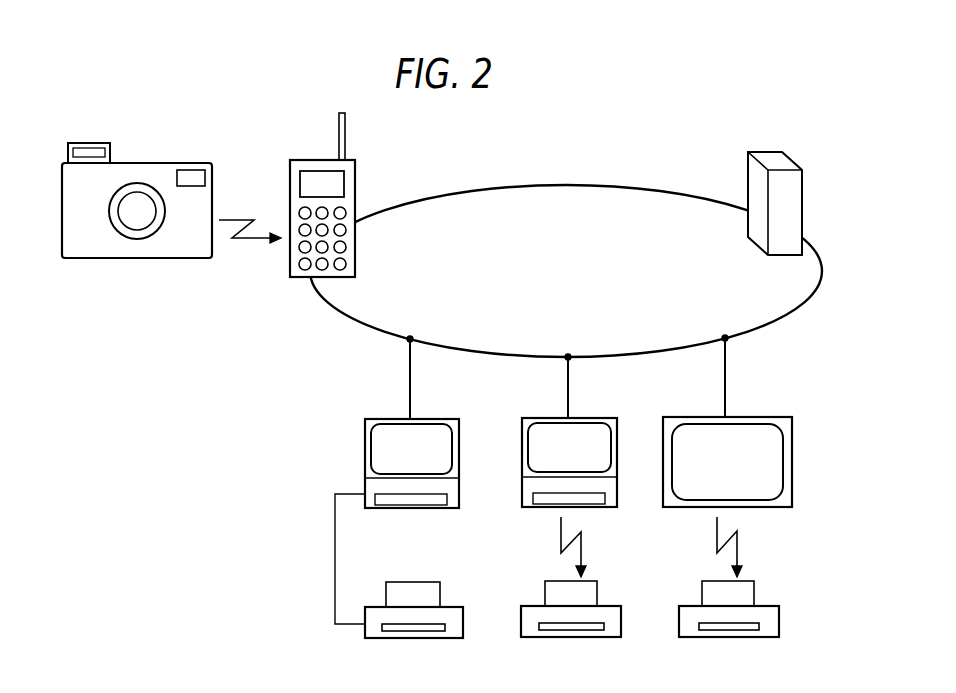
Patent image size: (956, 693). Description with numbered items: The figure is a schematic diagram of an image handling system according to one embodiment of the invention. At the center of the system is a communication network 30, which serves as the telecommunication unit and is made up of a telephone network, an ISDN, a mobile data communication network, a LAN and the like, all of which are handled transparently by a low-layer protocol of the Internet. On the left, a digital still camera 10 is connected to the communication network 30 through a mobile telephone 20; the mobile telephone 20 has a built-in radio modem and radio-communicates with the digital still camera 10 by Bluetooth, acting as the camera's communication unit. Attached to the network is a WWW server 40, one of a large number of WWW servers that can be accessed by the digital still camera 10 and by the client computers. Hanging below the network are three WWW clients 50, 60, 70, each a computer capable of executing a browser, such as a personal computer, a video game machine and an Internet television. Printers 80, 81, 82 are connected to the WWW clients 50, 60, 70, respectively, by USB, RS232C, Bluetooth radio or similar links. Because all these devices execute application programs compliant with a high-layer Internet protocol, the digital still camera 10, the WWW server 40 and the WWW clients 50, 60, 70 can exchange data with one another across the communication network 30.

The digital still camera 10 is at (133, 163).
The mobile telephone 20 is at (317, 160).
The communication network 30 is at (567, 185).
The WWW server 40 is at (766, 152).
The WWW client 50 is at (433, 419).
The WWW client 60 is at (591, 418).
The WWW client 70 is at (751, 417).
The printer 80 is at (450, 607).
The printer 81 is at (608, 606).
The printer 82 is at (765, 606).